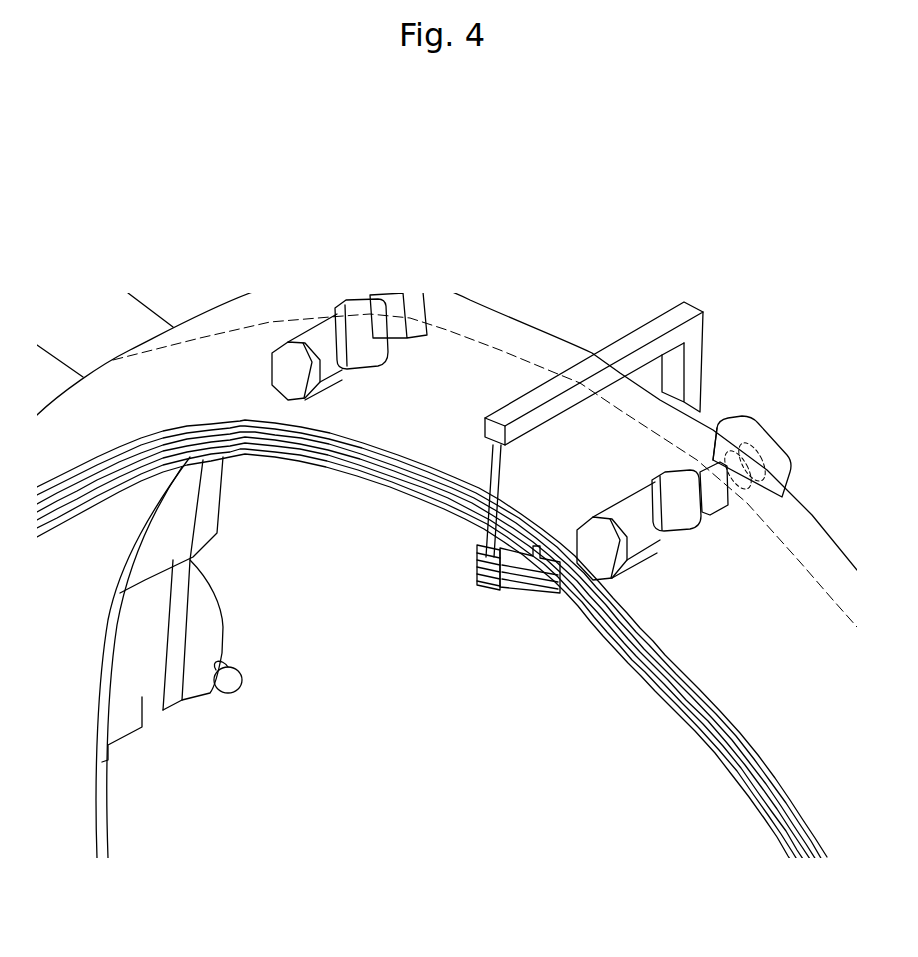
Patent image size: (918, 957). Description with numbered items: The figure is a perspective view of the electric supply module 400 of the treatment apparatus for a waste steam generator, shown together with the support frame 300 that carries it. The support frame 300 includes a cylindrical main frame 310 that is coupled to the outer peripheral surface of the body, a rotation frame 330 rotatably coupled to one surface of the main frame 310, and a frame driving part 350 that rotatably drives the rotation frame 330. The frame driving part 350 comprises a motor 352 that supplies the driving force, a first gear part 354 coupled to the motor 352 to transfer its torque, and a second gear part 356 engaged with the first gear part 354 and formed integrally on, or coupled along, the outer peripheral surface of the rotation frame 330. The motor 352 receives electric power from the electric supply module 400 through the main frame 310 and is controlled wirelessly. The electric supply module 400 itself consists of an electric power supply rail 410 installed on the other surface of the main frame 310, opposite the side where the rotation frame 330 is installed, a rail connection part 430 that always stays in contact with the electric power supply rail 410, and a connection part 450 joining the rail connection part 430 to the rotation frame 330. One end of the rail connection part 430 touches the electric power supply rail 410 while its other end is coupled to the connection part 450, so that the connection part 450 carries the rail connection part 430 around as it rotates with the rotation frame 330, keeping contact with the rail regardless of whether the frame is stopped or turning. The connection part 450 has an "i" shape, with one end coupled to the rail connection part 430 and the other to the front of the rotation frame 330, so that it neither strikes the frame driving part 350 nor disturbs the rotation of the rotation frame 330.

The support frame 300 is at (752, 127).
The main frame 310 is at (367, 427).
The rotation frame 330 is at (546, 340).
The frame driving part 350 is at (690, 178).
The motor 352 is at (640, 507).
The first gear part 354 is at (722, 455).
The second gear part 356 is at (763, 450).
The electric supply module 400 is at (473, 711).
The electric power supply rail 410 is at (440, 497).
The rail connection part 430 is at (527, 580).
The connection part 450 is at (507, 415).